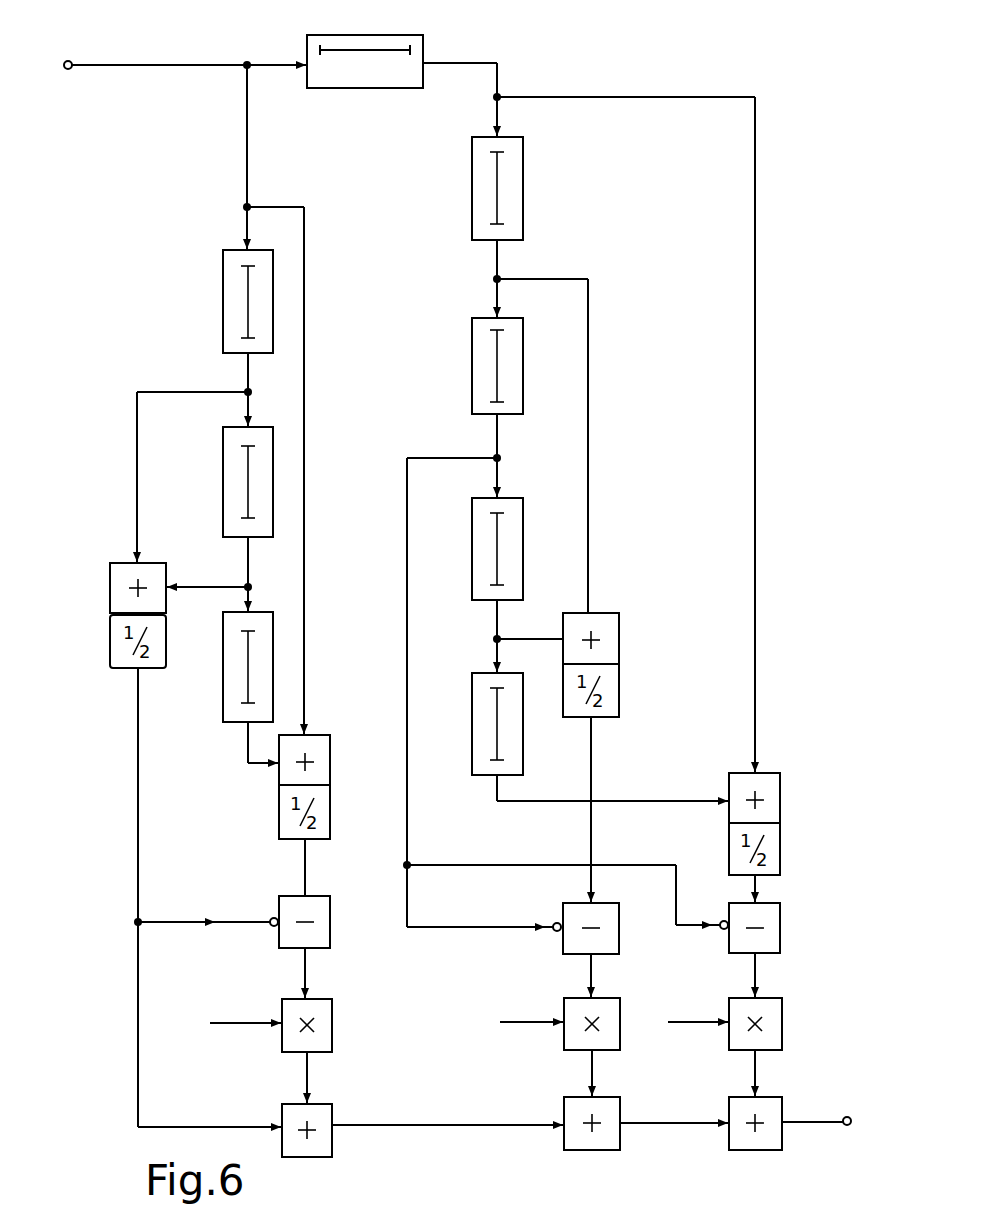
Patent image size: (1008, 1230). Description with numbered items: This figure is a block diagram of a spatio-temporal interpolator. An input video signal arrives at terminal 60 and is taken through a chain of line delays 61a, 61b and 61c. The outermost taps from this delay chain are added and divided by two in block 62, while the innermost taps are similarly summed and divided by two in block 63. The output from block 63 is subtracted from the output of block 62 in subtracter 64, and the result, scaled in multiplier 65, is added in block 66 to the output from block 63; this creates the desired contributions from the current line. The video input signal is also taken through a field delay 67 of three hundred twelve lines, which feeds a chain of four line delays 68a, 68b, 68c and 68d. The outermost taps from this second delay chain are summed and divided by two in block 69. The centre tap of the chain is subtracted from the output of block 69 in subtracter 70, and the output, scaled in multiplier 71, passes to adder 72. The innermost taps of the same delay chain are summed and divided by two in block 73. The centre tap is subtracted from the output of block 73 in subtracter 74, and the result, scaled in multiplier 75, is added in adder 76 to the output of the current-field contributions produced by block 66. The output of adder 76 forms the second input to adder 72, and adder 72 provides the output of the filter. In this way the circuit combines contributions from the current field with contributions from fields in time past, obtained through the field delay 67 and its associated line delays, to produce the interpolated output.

The input terminal 60 is at (69, 51).
The field delay 67 is at (365, 44).
The line delay 61a is at (223, 301).
The line delay 61b is at (223, 482).
The line delay 61c is at (223, 671).
The line delay 68a is at (475, 188).
The line delay 68b is at (475, 366).
The line delay 68c is at (475, 549).
The line delay 68d is at (475, 724).
The block 62 is at (320, 787).
The block 63 is at (121, 615).
The subtracter 64 is at (316, 916).
The multiplier 65 is at (279, 1026).
The block 66 is at (322, 1122).
The block 69 is at (772, 824).
The subtracter 70 is at (768, 917).
The multiplier 71 is at (735, 1025).
The adder 72 is at (797, 1122).
The block 73 is at (607, 665).
The subtracter 74 is at (576, 918).
The multiplier 75 is at (550, 1025).
The adder 76 is at (576, 1118).